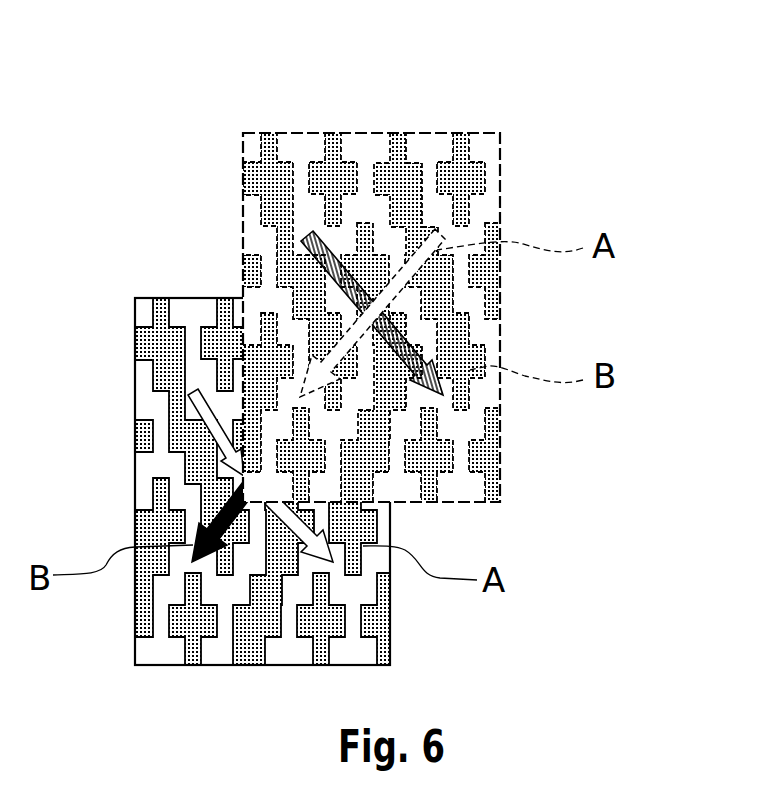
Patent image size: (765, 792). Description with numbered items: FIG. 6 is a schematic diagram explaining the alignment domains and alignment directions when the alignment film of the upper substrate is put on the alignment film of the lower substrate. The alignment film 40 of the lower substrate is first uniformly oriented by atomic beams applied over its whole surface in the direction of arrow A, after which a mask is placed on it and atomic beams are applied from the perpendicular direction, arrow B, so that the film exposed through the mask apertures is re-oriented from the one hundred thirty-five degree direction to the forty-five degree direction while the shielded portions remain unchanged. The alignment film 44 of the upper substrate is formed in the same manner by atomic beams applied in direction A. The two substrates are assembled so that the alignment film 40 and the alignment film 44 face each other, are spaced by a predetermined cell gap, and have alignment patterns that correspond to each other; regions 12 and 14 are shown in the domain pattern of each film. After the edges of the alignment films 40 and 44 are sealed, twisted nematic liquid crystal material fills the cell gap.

The web portions between openings 12 is at (315, 345).
The cross-shaped openings 14 is at (315, 345).
The alignment film 40 is at (150, 282).
The alignment film 44 is at (497, 133).